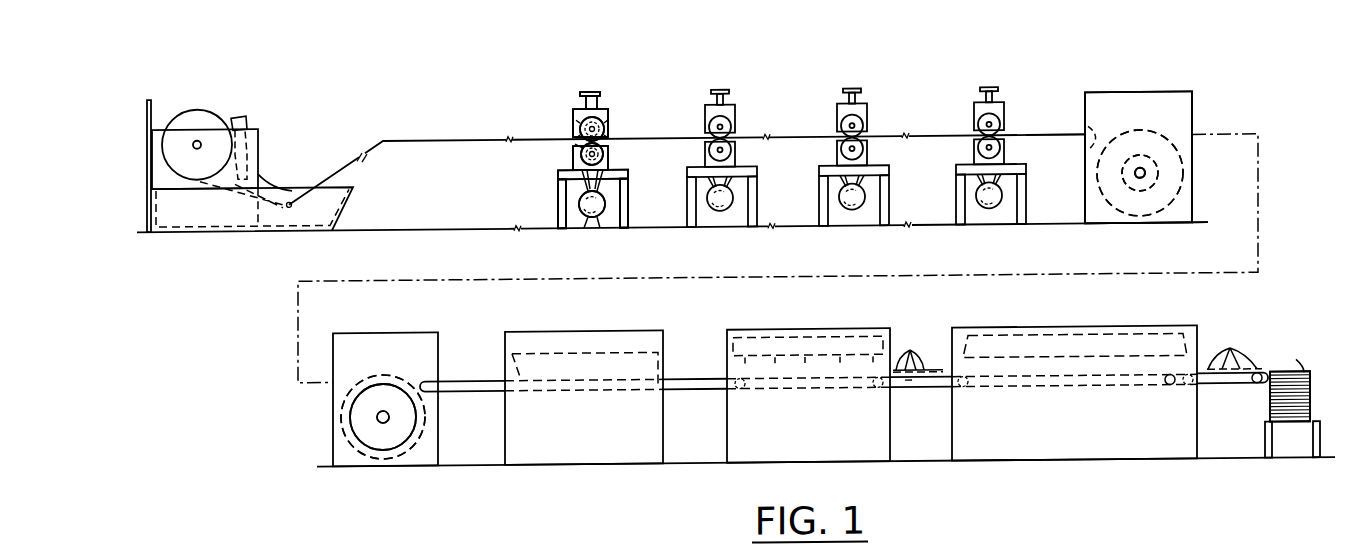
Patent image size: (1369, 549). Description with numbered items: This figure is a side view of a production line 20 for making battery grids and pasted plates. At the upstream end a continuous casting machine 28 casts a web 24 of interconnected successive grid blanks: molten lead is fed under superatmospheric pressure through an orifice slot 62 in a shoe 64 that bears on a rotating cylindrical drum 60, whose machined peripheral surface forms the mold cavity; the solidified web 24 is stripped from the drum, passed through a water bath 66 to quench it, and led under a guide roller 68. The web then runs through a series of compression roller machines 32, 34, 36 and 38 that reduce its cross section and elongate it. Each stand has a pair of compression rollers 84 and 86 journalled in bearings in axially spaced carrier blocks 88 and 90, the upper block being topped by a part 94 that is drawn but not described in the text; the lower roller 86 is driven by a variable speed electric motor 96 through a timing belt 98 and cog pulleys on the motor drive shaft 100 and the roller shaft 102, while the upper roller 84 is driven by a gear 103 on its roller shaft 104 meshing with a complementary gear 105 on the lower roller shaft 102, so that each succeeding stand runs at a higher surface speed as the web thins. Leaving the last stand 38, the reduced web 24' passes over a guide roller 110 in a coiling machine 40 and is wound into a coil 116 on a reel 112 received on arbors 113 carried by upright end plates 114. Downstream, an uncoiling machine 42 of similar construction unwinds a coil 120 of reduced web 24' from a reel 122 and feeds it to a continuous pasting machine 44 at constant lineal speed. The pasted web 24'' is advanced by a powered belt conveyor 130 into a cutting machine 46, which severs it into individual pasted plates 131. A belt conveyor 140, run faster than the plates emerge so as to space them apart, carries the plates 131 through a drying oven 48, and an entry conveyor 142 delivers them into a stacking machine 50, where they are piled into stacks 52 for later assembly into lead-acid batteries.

The production line 20 is at (1252, 64).
The web 24 is at (687, 159).
The reduced web 24' is at (752, 239).
The pasted web 24'' is at (776, 357).
The continuous casting machine 28 is at (157, 93).
The compression roller machine 32 is at (606, 55).
The compression roller machine 34 is at (724, 78).
The compression roller machine 36 is at (856, 77).
The compression roller machine 38 is at (994, 80).
The coiling machine 40 is at (1120, 90).
The uncoiling machine 42 is at (405, 328).
The continuous pasting machine 44 is at (584, 328).
The cutting machine 46 is at (822, 326).
The drying oven 48 is at (1082, 328).
The stacking machine 50 is at (1289, 360).
The stacks 52 is at (1318, 396).
The rotating cylindrical drum 60 is at (199, 106).
The orifice slot 62 is at (256, 143).
The shoe 64 is at (243, 113).
The water bath 66 is at (210, 214).
The guide roller 68 is at (290, 212).
The upper compression roller 84 is at (604, 115).
The lower compression roller 86 is at (606, 153).
The carrier blocks 88 is at (574, 112).
The carrier blocks 90 is at (581, 88).
The adjustment handle 94 is at (601, 91).
The electric motor 96 is at (598, 218).
The timing belt 98 is at (580, 203).
The motor drive shaft 100 is at (588, 212).
The lower roller shaft 102 is at (603, 170).
The gear 103 is at (580, 126).
The upper roller shaft 104 is at (604, 125).
The gear 105 is at (577, 147).
The guide roller 110 is at (1083, 167).
The reel 112 is at (1163, 141).
The arbors 113 is at (1148, 180).
The upright end plates 114 is at (1158, 95).
The coil 116 is at (1160, 170).
The coil 120 is at (352, 425).
The reel 122 is at (352, 444).
The powered belt conveyor 130 is at (694, 392).
The individual pasted plates 131 is at (1326, 350).
The belt conveyor 140 is at (916, 392).
The entry conveyor 142 is at (1223, 392).